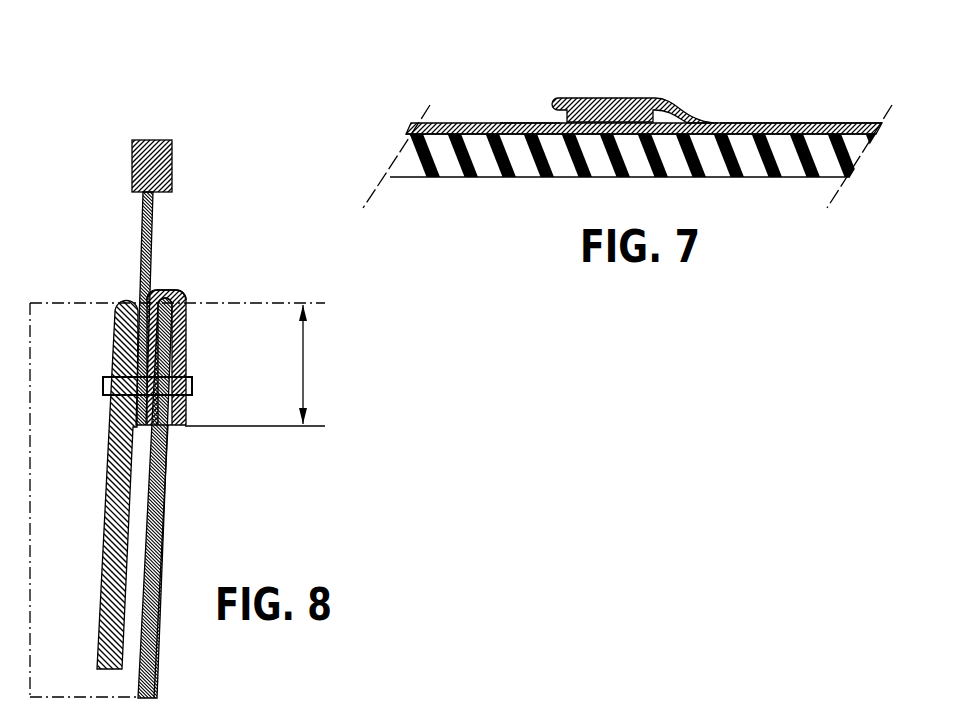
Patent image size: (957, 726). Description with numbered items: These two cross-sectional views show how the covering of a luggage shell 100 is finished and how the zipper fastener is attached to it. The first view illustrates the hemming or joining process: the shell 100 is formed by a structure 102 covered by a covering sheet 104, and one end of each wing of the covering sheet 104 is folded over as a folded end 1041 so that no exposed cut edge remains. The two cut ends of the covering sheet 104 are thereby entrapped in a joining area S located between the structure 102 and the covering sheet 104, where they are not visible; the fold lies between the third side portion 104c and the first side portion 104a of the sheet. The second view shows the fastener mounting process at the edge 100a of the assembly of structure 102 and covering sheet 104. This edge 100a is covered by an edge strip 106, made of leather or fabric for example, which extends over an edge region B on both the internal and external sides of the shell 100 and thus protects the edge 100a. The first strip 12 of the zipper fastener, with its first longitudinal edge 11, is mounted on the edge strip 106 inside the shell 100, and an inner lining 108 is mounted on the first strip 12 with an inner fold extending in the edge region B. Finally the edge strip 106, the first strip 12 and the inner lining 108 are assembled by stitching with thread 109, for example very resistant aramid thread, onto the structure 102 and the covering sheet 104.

In FIG. 7, the structure 102 is at (498, 163).
In FIG. 8, the structure 102 is at (165, 530).
In FIG. 7, the covering sheet 104 is at (473, 121).
In FIG. 8, the covering sheet 104 is at (157, 650).
In FIG. 7, the third side portion 104c is at (522, 121).
In FIG. 7, the first side portion 104a is at (800, 121).
In FIG. 7, the folded cover layer section 1041 is at (612, 95).
In FIG. 7, the joining area S is at (664, 123).
In FIG. 8, the first longitudinal edge 11 is at (152, 172).
In FIG. 8, the first strip 12 is at (152, 238).
In FIG. 8, the shell 100 is at (262, 539).
In FIG. 8, the edge 100a is at (160, 292).
In FIG. 8, the edge strip 106 is at (187, 335).
In FIG. 8, the inner lining 108 is at (118, 492).
In FIG. 8, the thread 109 is at (192, 380).
In FIG. 8, the edge region B is at (255, 365).